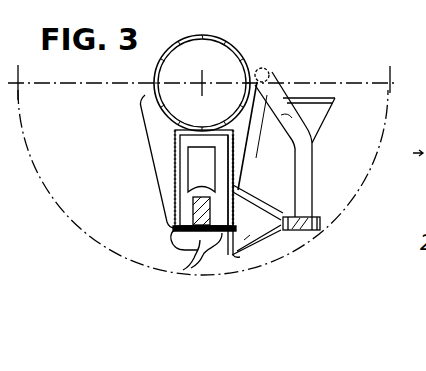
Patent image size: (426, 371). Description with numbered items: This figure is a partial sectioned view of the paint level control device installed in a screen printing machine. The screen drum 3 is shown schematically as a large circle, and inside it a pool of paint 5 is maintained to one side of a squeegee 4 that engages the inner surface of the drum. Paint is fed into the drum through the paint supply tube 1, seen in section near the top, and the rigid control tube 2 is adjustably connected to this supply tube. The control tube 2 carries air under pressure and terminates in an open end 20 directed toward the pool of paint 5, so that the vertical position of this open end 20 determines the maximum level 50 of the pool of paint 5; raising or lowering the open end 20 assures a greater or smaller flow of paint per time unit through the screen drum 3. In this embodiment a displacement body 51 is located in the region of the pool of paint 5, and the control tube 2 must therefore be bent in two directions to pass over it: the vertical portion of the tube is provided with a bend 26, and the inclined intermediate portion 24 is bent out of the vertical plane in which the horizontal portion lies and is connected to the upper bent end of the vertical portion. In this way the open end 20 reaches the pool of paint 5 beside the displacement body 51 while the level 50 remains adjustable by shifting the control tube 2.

The paint supply tube 1 is at (236, 50).
The control tube 2 is at (302, 183).
The screen drum 3 is at (78, 227).
The squeegee 4 is at (200, 242).
The pool of paint 5 is at (263, 255).
The open end 20 is at (308, 230).
The inclined intermediate portion 24 is at (275, 92).
The bend 26 is at (306, 140).
The level 50 is at (323, 217).
The displacement body 51 is at (248, 238).